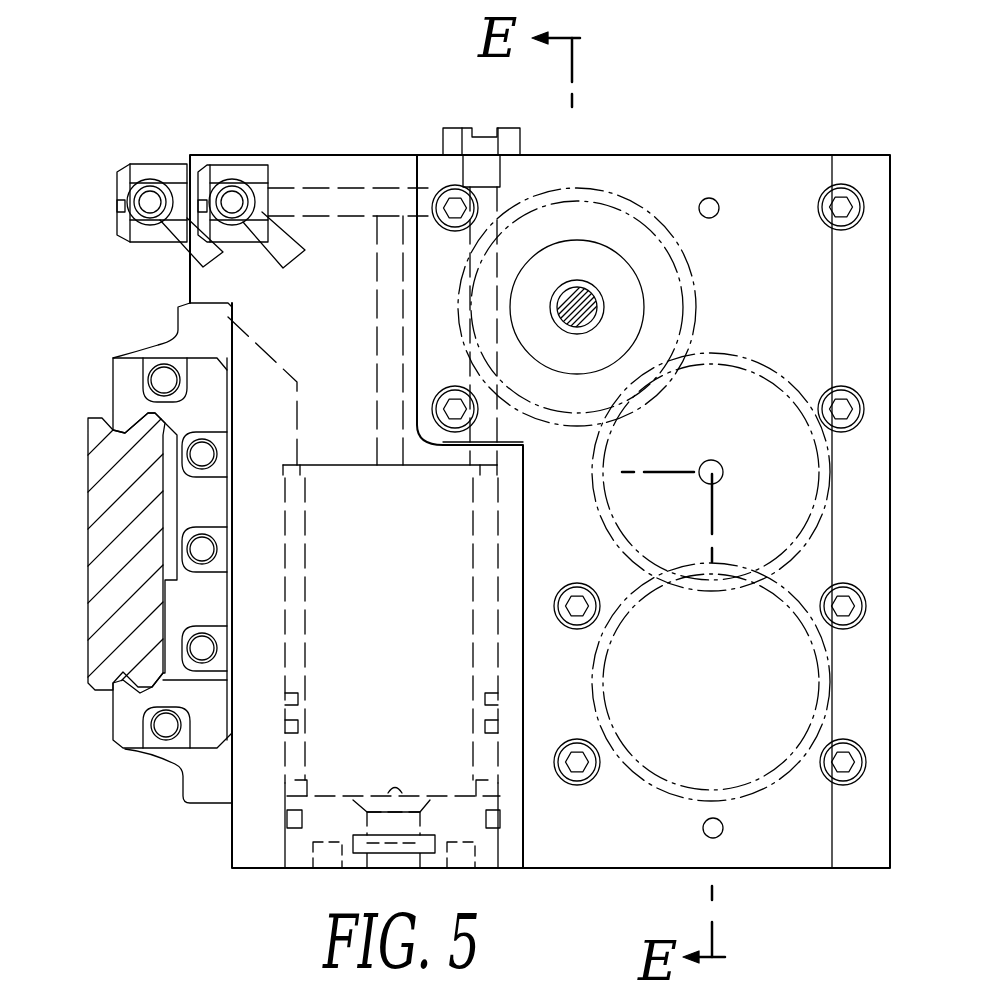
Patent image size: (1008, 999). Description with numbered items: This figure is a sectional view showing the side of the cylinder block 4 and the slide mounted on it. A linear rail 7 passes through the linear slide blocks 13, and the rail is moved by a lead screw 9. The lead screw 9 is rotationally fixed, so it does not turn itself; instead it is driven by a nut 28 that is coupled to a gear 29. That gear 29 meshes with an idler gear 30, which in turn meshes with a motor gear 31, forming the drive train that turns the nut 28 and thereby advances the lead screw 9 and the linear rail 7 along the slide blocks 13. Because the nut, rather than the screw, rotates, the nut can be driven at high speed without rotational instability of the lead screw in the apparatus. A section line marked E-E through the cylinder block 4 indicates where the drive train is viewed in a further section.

The cylinder block 4 is at (232, 830).
The linear rail 7 is at (88, 597).
The lead screw 9 is at (585, 292).
The linear slide blocks 13 is at (114, 358).
The nut 28 is at (678, 267).
The gear 29 is at (680, 290).
The idler gear 30 is at (738, 365).
The motor gear 31 is at (763, 783).